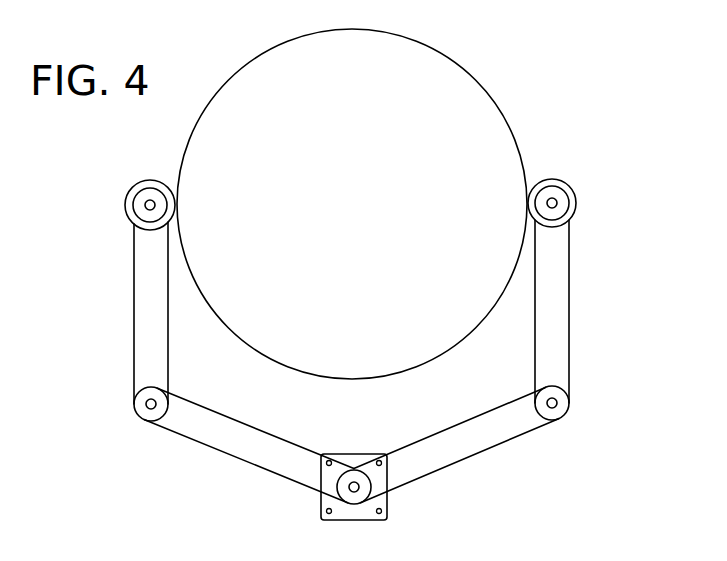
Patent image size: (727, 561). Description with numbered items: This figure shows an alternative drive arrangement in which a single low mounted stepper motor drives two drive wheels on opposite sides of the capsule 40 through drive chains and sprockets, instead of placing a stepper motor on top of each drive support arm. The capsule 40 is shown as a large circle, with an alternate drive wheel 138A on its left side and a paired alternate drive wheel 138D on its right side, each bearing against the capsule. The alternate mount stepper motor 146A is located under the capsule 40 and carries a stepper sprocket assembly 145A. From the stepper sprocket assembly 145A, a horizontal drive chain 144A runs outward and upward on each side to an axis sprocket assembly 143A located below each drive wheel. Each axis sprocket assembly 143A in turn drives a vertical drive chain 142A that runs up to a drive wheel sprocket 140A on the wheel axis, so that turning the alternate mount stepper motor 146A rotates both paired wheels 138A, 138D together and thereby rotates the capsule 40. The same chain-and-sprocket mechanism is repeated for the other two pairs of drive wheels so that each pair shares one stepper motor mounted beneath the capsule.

The capsule 40 is at (349, 207).
The alternate drive wheel 138A is at (136, 186).
The alternate drive wheel 138D is at (576, 184).
The drive wheel sprocket 140A is at (134, 211).
The vertical drive chain 142A is at (133, 306).
The axis sprocket assembly 143A is at (141, 389).
The horizontal drive chain 144A is at (225, 454).
The stepper sprocket assembly 145A is at (349, 490).
The alternate mount stepper motor 146A is at (387, 498).